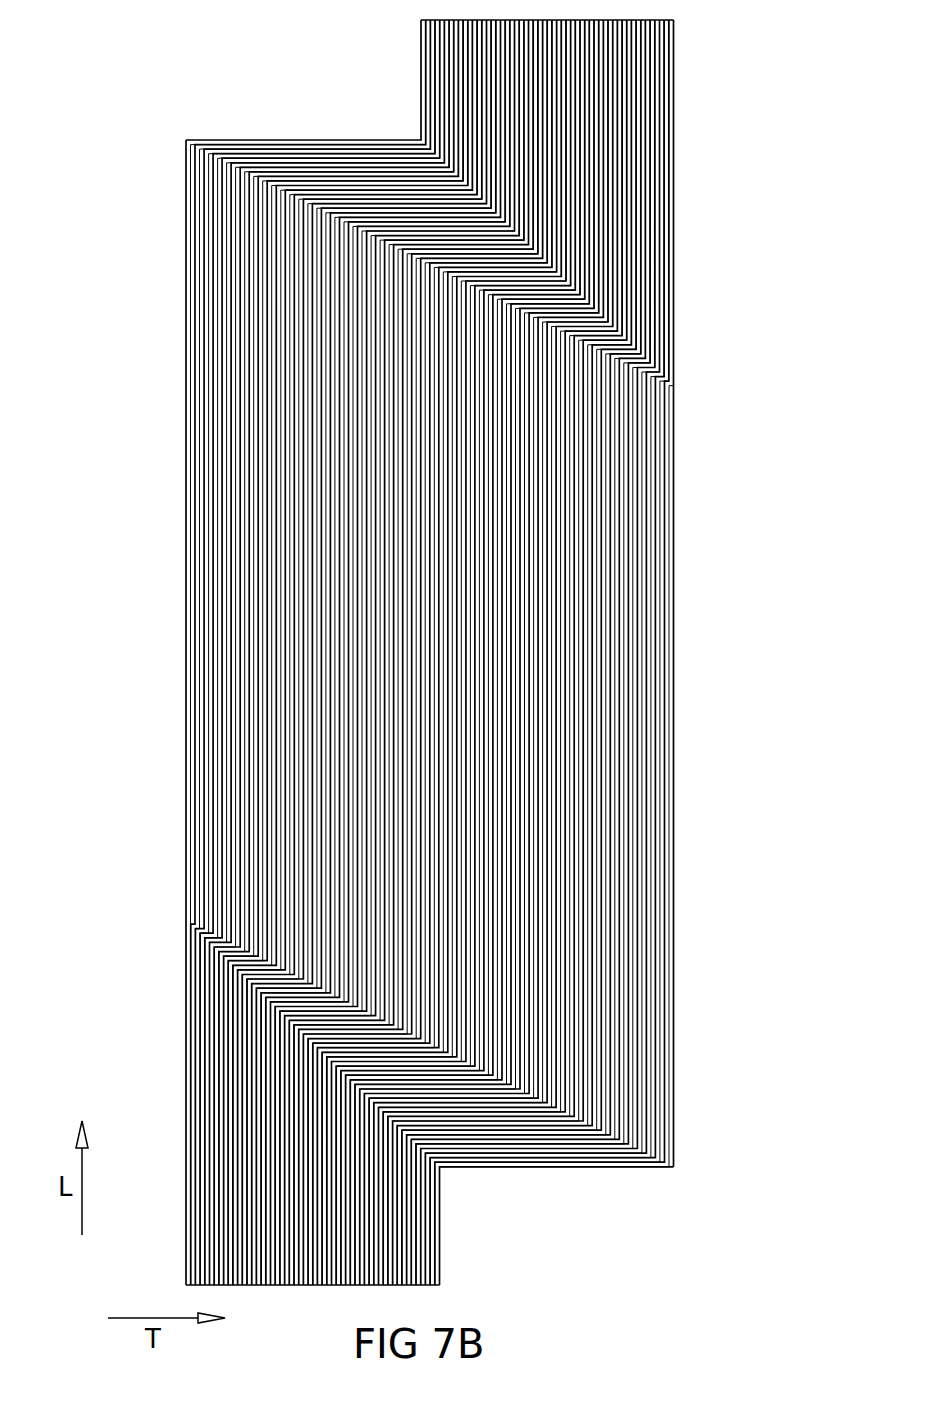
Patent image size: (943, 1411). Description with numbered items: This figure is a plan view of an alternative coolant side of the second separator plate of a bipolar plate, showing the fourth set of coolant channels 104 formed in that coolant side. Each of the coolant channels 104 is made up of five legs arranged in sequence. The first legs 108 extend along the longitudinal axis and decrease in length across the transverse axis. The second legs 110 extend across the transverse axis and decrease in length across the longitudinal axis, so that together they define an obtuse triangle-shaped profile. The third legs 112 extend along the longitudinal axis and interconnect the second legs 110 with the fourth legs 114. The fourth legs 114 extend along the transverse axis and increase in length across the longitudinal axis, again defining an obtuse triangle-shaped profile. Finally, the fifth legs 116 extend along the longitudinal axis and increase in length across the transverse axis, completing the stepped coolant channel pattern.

The fourth set of coolant channels 104 is at (450, 648).
The first legs 108 is at (180, 1085).
The second legs 110 is at (515, 1162).
The third legs 112 is at (645, 712).
The fourth legs 114 is at (246, 133).
The fifth legs 116 is at (662, 78).